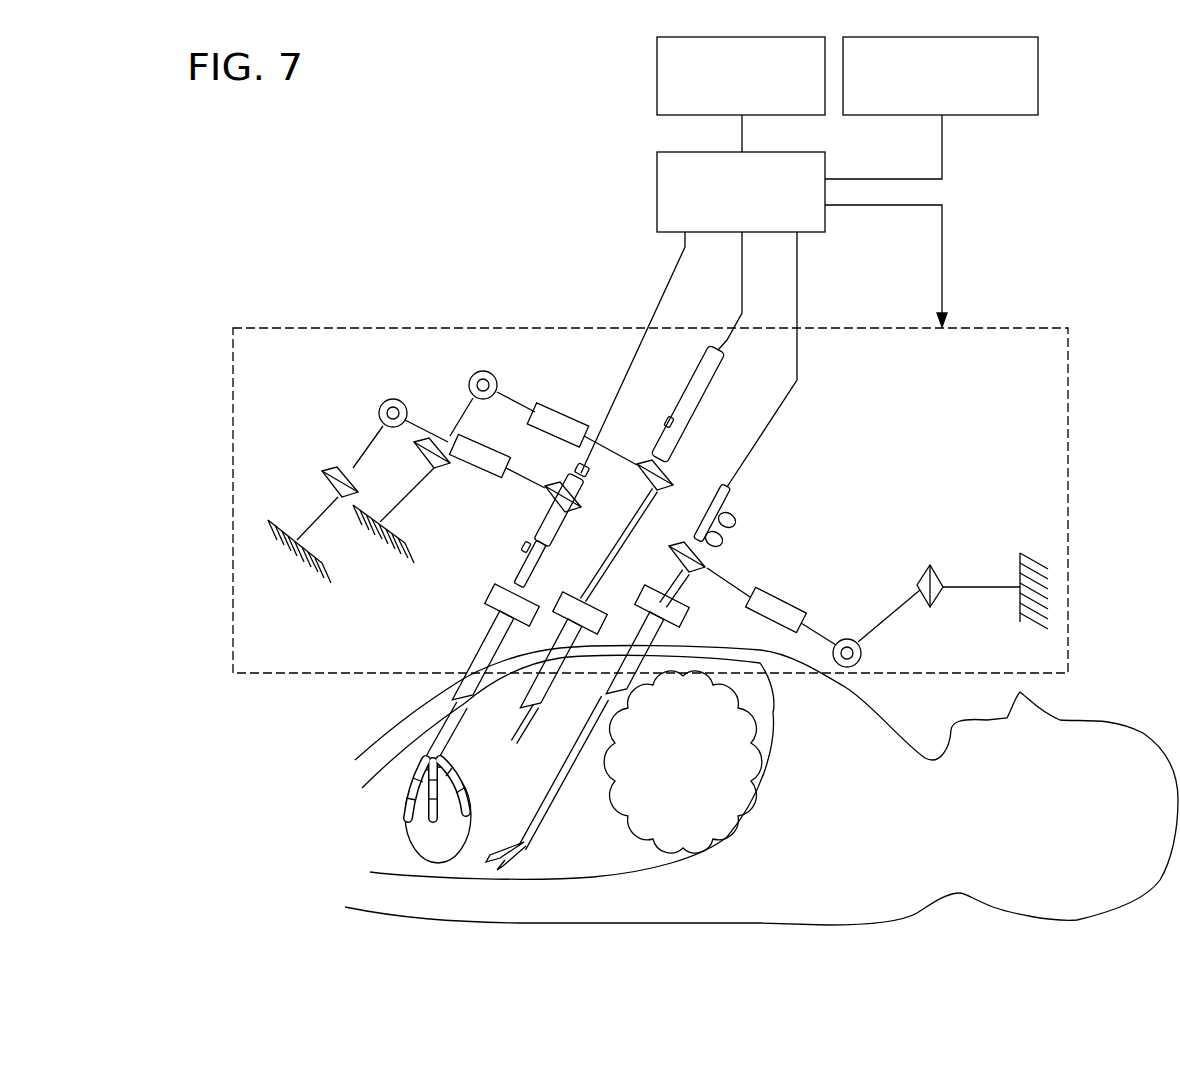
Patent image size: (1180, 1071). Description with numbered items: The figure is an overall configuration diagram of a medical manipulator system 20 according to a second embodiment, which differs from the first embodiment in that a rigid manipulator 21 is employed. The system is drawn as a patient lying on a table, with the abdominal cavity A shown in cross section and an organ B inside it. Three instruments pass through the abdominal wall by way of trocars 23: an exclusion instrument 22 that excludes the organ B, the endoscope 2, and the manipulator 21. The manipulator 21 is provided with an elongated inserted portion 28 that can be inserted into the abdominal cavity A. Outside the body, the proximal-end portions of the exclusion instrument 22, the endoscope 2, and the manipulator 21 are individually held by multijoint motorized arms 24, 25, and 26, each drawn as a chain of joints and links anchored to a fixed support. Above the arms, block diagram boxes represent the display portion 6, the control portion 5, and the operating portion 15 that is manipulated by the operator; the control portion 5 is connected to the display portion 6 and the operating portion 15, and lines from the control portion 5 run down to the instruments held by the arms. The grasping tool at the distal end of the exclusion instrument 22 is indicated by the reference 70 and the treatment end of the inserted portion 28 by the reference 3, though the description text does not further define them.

The endoscope 2 is at (730, 402).
The treatment portion 3 is at (513, 840).
The control portion 5 is at (657, 190).
The display portion 6 is at (657, 75).
The operating portion 15 is at (1038, 75).
The medical manipulator system 20 is at (405, 185).
The manipulator 21 is at (775, 535).
The exclusion instrument 22 is at (450, 638).
The trocars 23 is at (470, 655).
The multijoint motorized arm 24 is at (345, 430).
The multijoint motorized arm 25 is at (520, 360).
The multijoint motorized arm 26 is at (980, 535).
The inserted portion 28 is at (565, 770).
The grasping forceps 70 is at (395, 745).
The abdominal cavity A is at (595, 858).
The organ B is at (425, 840).